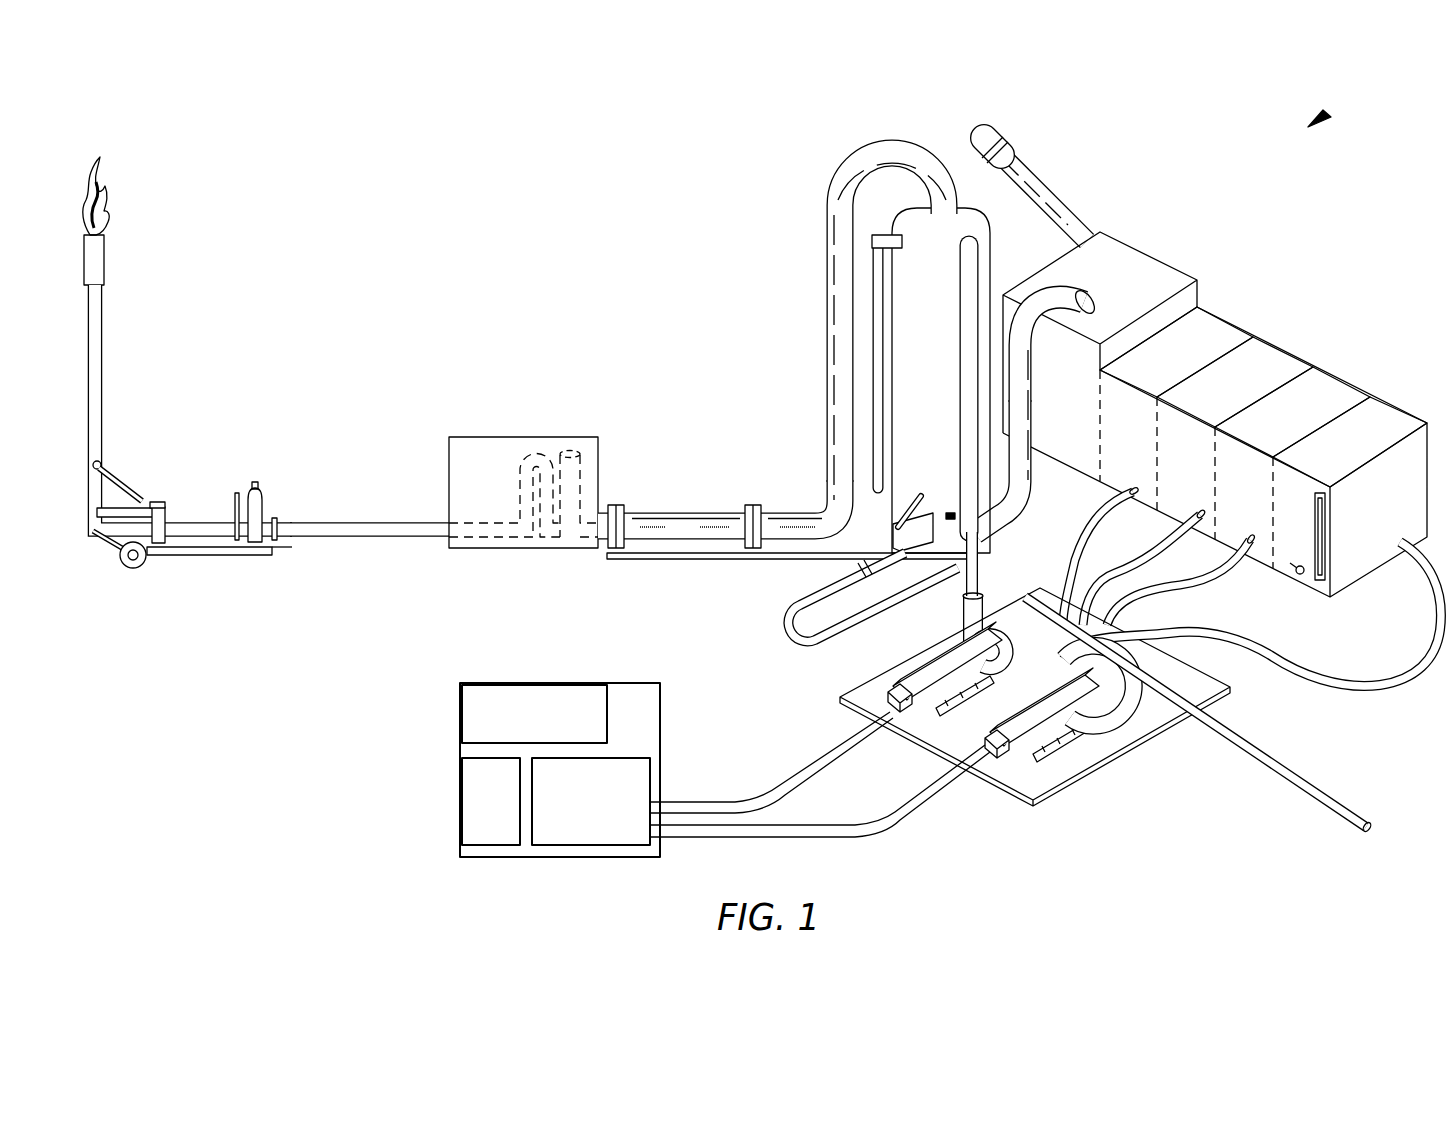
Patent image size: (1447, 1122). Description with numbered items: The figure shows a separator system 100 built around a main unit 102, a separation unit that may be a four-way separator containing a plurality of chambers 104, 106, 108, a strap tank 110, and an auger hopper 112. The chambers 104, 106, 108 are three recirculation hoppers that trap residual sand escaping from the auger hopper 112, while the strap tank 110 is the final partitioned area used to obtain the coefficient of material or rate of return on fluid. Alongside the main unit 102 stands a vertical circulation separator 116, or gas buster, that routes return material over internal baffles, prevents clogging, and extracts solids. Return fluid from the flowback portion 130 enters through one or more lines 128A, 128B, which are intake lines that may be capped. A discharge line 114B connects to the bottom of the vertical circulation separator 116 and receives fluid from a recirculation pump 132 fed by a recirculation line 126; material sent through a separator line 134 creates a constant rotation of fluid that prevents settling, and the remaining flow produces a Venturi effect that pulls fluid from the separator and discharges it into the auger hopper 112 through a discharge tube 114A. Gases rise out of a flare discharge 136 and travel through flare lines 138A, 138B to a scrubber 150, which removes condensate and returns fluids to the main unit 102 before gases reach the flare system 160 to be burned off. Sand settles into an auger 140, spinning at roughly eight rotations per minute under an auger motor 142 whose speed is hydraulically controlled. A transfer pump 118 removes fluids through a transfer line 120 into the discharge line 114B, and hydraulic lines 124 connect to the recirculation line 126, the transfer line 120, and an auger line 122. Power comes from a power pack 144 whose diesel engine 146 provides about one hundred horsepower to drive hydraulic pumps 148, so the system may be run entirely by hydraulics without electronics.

The separator system 100 is at (1327, 114).
The main unit 102 is at (1398, 511).
The chamber 104 is at (1190, 366).
The chamber 106 is at (1246, 396).
The chamber 108 is at (1305, 425).
The strap tank 110 is at (1363, 453).
The auger hopper 112 is at (1150, 300).
The discharge tube 114A is at (1097, 290).
The discharge line 114B is at (1003, 512).
The vertical circulation separator 116 is at (941, 305).
The transfer pump 118 is at (1065, 752).
The transfer line 120 is at (1368, 677).
The auger line 122 is at (1327, 790).
The hydraulic lines 124 is at (810, 757).
The recirculation line 126 is at (783, 612).
The line 128A is at (880, 490).
The line 128B is at (978, 542).
The flowback portion 130 is at (697, 560).
The recirculation pump 132 is at (937, 666).
The separator line 134 is at (909, 498).
The flare discharge 136 is at (878, 142).
The flare line 138A is at (697, 512).
The flare line 138B is at (328, 520).
The auger 140 is at (1040, 178).
The auger motor 142 is at (1003, 130).
The power pack 144 is at (583, 755).
The diesel engine 146 is at (550, 738).
The hydraulic pumps 148 is at (505, 830).
The scrubber 150 is at (527, 436).
The flare system 160 is at (157, 502).